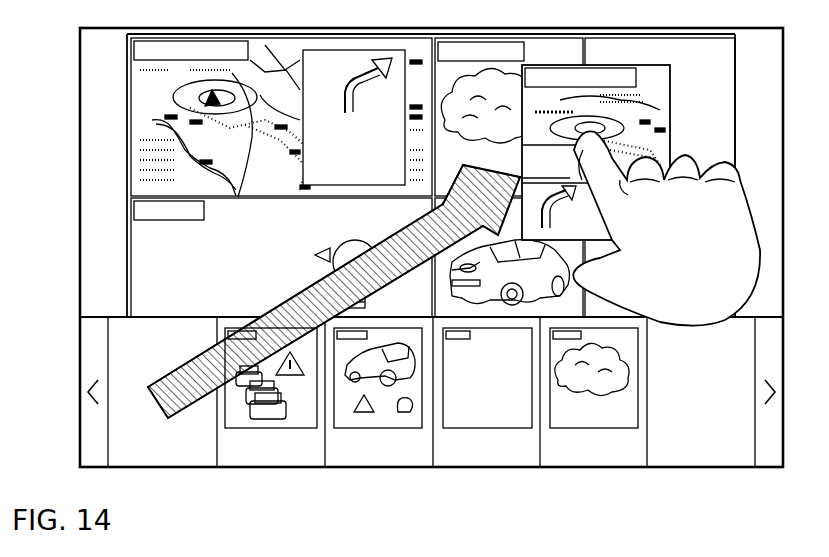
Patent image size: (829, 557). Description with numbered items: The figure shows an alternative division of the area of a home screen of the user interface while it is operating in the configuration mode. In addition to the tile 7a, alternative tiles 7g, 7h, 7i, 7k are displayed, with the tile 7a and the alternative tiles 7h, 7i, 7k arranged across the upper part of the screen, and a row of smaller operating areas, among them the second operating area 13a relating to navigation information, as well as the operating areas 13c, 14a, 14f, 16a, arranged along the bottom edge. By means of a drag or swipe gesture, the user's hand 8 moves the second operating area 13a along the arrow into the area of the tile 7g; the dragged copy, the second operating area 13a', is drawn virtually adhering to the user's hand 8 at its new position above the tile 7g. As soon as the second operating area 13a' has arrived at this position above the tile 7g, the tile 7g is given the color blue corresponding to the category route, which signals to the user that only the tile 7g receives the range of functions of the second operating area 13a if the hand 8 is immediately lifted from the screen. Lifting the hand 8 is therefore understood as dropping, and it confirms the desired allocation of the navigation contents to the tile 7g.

The tile 7a is at (275, 58).
The alternative tile 7i is at (242, 217).
The alternative tile 7h is at (483, 83).
The alternative tile 7k is at (528, 306).
The alternative tile 7g is at (702, 84).
The second operating area 13a' is at (596, 120).
The hand 8 is at (666, 228).
The second operating area 13a is at (166, 468).
The traffic menu tile 13c is at (232, 462).
The vehicle menu tile 14a is at (335, 462).
The data menu tile 14f is at (447, 462).
The weather menu tile 16a is at (607, 462).